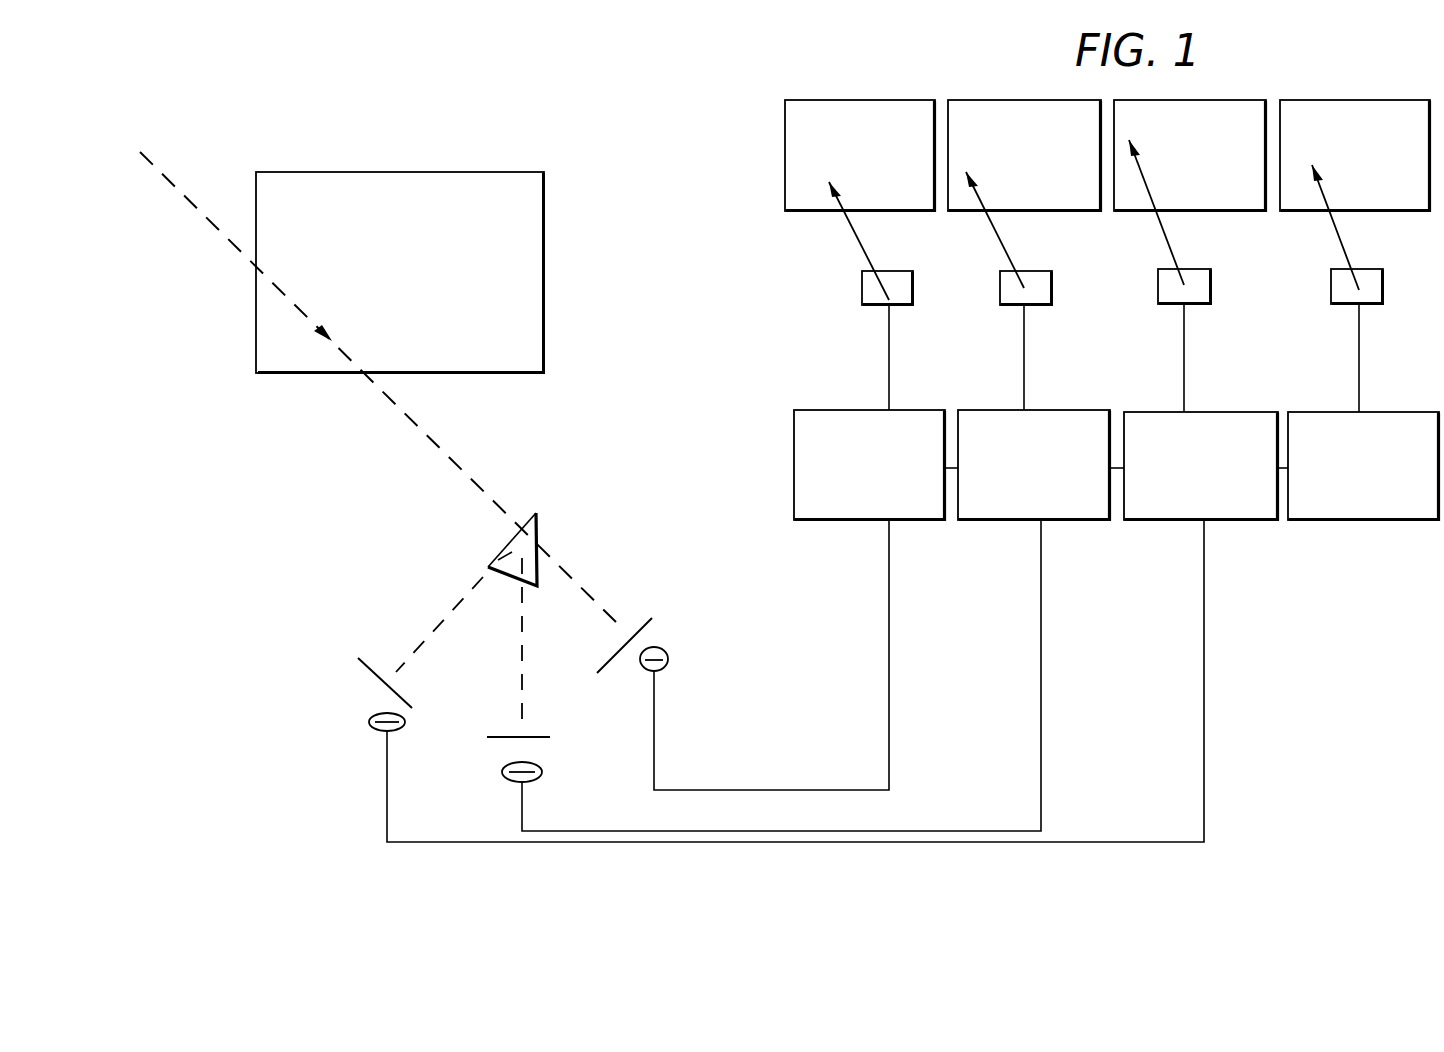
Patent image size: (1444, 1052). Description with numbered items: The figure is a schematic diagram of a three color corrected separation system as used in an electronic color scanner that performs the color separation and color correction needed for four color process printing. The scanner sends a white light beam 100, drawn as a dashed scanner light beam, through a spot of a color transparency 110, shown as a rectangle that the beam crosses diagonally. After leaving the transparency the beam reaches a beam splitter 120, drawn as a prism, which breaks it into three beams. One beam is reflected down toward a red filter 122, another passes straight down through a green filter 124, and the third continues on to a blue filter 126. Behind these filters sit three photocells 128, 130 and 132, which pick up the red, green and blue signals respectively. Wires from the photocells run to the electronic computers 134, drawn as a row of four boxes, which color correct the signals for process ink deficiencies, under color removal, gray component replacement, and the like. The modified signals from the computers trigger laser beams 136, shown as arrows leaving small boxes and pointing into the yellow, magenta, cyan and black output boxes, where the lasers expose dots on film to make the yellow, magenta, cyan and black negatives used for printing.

The white light beam 100 is at (381, 390).
The color transparency 110 is at (405, 253).
The beam splitter 120 is at (545, 604).
The red filter 122 is at (376, 683).
The green filter 124 is at (547, 743).
The blue filter 126 is at (652, 631).
The photocell 128 is at (728, 681).
The photocell 130 is at (771, 675).
The photocell 132 is at (764, 655).
The electronic computers 134 is at (886, 484).
The laser beams 136 is at (1108, 256).